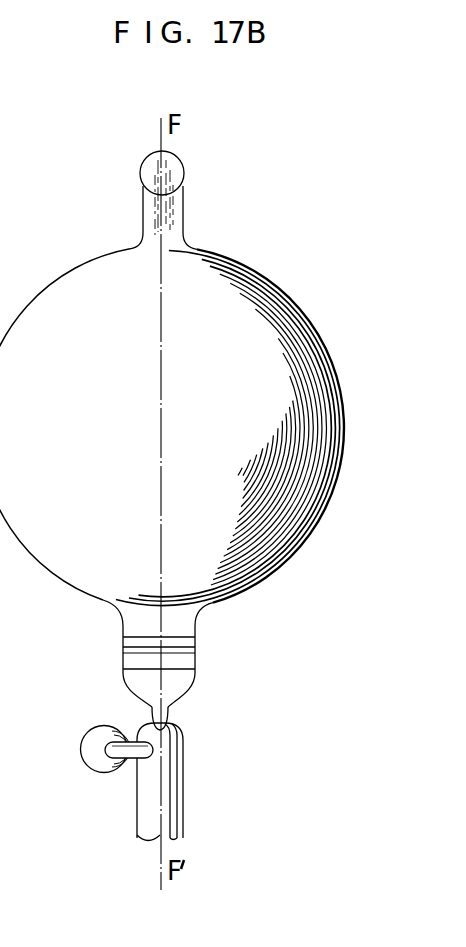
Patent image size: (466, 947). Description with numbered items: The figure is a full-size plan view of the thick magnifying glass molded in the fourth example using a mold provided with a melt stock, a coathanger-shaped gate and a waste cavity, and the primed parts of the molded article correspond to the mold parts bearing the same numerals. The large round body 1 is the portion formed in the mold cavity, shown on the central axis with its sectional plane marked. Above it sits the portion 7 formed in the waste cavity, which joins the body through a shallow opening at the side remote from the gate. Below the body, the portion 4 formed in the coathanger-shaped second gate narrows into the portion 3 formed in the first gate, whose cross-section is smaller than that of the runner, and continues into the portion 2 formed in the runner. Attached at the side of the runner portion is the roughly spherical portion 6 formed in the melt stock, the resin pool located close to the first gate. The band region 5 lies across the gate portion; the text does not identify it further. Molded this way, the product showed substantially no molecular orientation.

The mold cavity 1 is at (343, 288).
The runner 2 is at (230, 784).
The first gate 3 is at (168, 711).
The second gate 4 is at (125, 682).
The bands 5 is at (123, 646).
The melt stock 6 is at (88, 765).
The waste cavity 7 is at (179, 180).